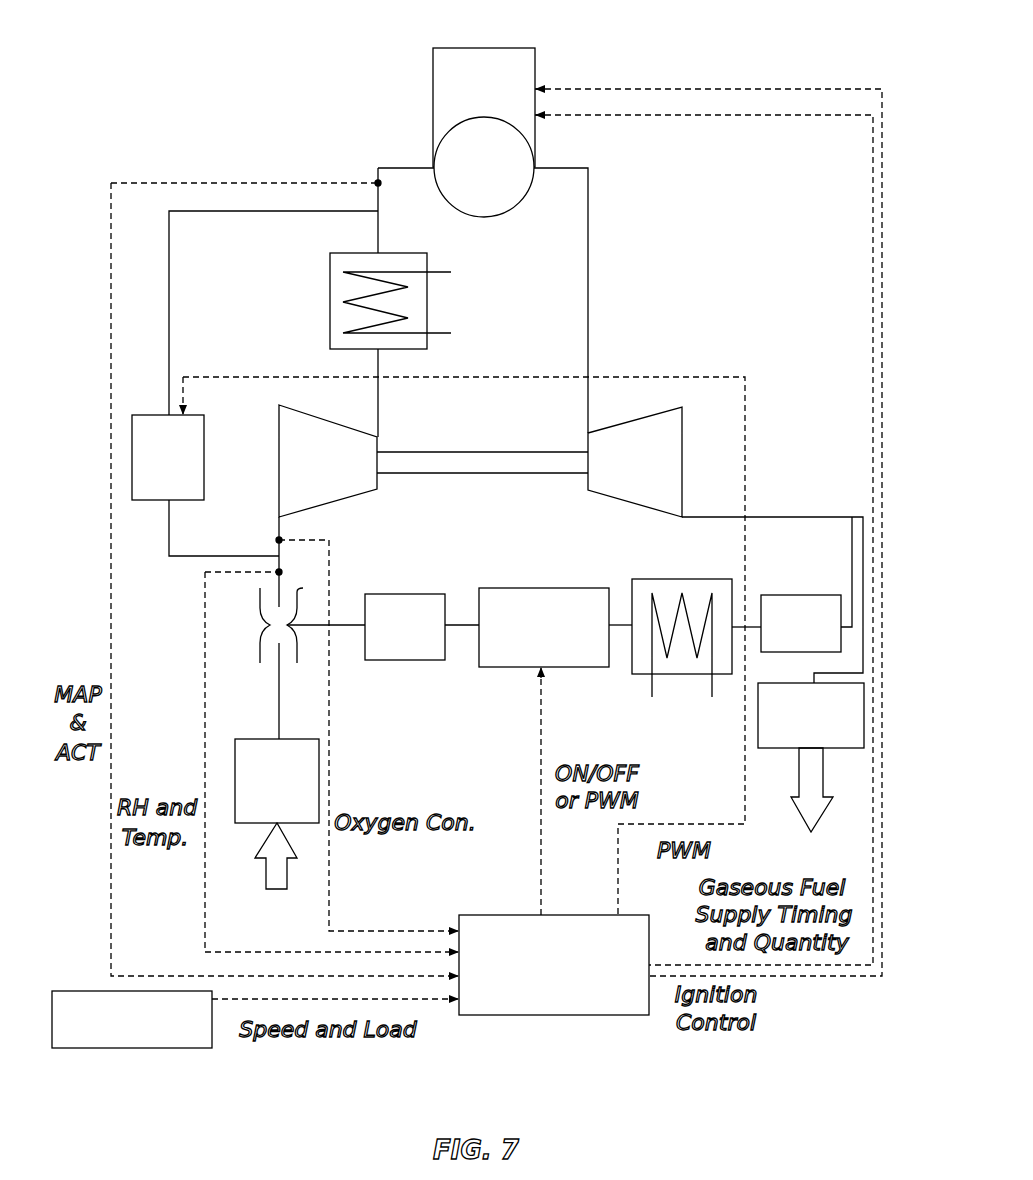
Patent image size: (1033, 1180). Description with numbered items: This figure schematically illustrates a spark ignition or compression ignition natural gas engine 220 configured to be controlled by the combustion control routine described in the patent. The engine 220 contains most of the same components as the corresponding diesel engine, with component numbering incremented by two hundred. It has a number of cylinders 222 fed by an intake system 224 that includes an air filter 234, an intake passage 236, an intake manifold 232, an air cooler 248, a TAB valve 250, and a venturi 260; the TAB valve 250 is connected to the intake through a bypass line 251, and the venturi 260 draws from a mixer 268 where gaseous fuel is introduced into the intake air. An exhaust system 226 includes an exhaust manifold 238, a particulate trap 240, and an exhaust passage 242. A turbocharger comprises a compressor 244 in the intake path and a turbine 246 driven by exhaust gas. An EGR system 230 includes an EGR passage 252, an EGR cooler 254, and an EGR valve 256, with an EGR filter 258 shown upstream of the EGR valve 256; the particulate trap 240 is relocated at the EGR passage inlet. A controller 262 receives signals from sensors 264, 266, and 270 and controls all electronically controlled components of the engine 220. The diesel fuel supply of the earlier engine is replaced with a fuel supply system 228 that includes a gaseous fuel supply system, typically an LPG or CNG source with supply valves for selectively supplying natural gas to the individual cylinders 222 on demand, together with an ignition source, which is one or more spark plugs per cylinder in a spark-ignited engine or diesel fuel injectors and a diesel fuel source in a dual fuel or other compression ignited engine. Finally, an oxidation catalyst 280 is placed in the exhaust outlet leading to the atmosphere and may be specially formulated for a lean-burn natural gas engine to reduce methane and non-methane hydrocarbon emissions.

The engine 220 is at (702, 38).
The cylinders 222 is at (500, 214).
The intake system 224 is at (268, 264).
The exhaust system 226 is at (615, 350).
The fuel supply system 228 is at (488, 49).
The EGR system 230 is at (762, 557).
The intake manifold 232 is at (433, 166).
The air filter 234 is at (319, 782).
The intake passage 236 is at (278, 703).
The exhaust manifold 238 is at (543, 168).
The particulate trap 240 is at (816, 655).
The exhaust passage 242 is at (588, 300).
The compressor 244 is at (377, 437).
The turbine 246 is at (682, 425).
The air cooler 248 is at (427, 300).
The TAB valve 250 is at (132, 448).
The turbo air bypass line 251 is at (169, 338).
The EGR passage 252 is at (627, 625).
The EGR cooler 254 is at (665, 580).
The EGR valve 256 is at (524, 588).
The EGR filter 258 is at (411, 594).
The venturi 260 is at (303, 588).
The controller 262 is at (590, 1015).
The sensor 264 is at (376, 182).
The sensor 266 is at (279, 540).
The mixer venturi 268 is at (275, 579).
The sensor 270 is at (108, 991).
The oxidation catalyst 280 is at (808, 751).